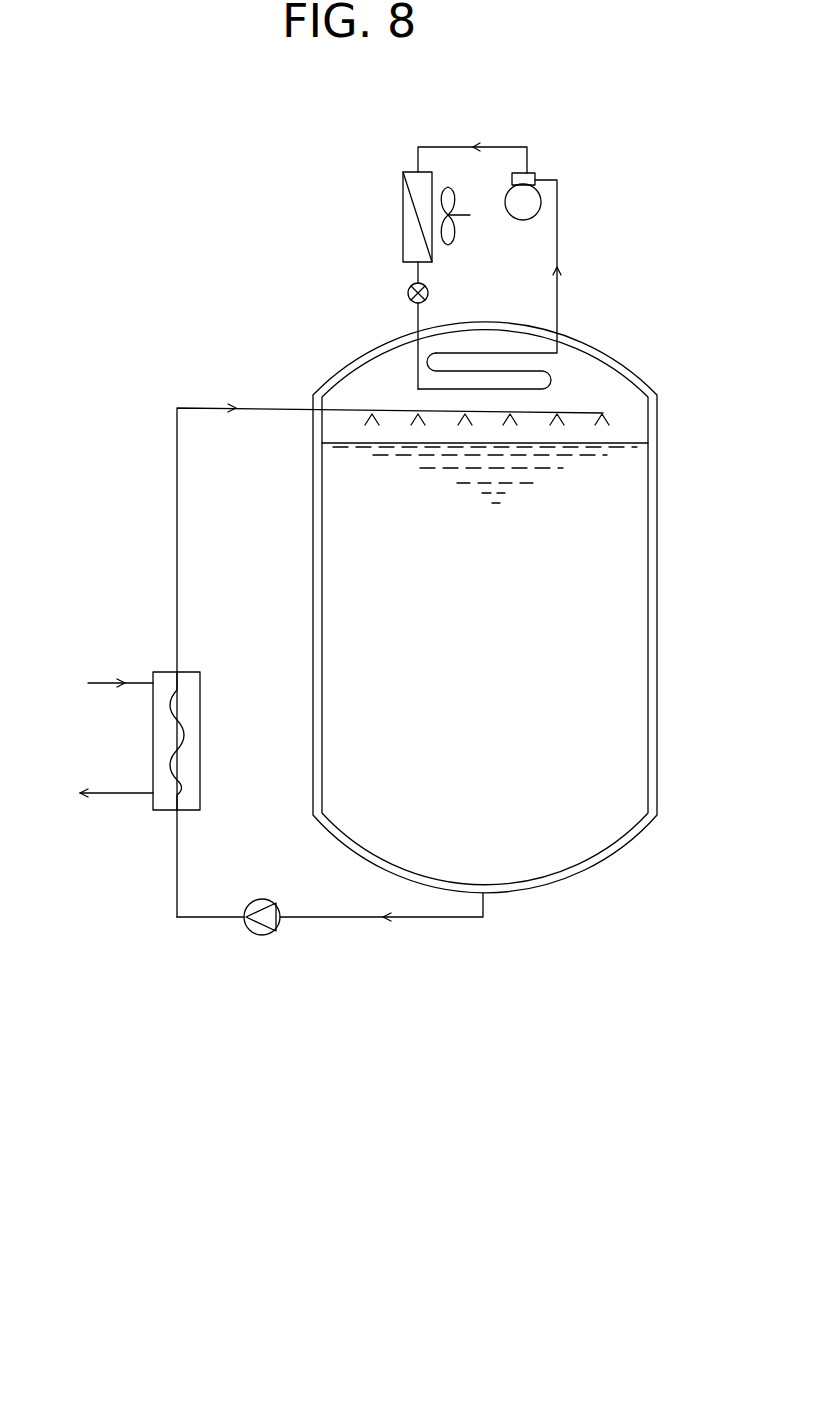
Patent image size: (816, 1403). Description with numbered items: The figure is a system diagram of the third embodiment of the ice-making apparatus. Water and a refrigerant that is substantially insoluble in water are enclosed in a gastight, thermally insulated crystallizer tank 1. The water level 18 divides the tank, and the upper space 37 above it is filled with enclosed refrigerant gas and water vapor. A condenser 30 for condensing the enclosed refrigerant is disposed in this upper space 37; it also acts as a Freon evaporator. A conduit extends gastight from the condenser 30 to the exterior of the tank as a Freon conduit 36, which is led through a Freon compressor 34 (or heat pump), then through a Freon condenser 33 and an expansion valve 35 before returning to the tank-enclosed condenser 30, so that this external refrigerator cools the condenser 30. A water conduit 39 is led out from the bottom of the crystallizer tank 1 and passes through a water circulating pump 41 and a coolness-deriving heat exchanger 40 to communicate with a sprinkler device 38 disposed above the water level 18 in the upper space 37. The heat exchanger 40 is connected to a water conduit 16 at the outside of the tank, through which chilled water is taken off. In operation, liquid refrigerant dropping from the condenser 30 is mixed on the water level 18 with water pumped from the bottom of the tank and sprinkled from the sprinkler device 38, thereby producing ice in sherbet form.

The crystallizer tank 1 is at (657, 572).
The water conduit 16 is at (92, 683).
The water level 18 is at (602, 452).
The condenser 30 is at (548, 376).
The Freon condenser 33 is at (403, 182).
The Freon compressor 34 is at (523, 220).
The expansion valve 35 is at (408, 293).
The Freon conduit 36 is at (558, 236).
The upper space 37 is at (330, 395).
The sprinkler device 38 is at (592, 417).
The water conduit 39 is at (353, 920).
The coolness-deriving heat exchanger 40 is at (200, 697).
The water circulating pump 41 is at (262, 935).